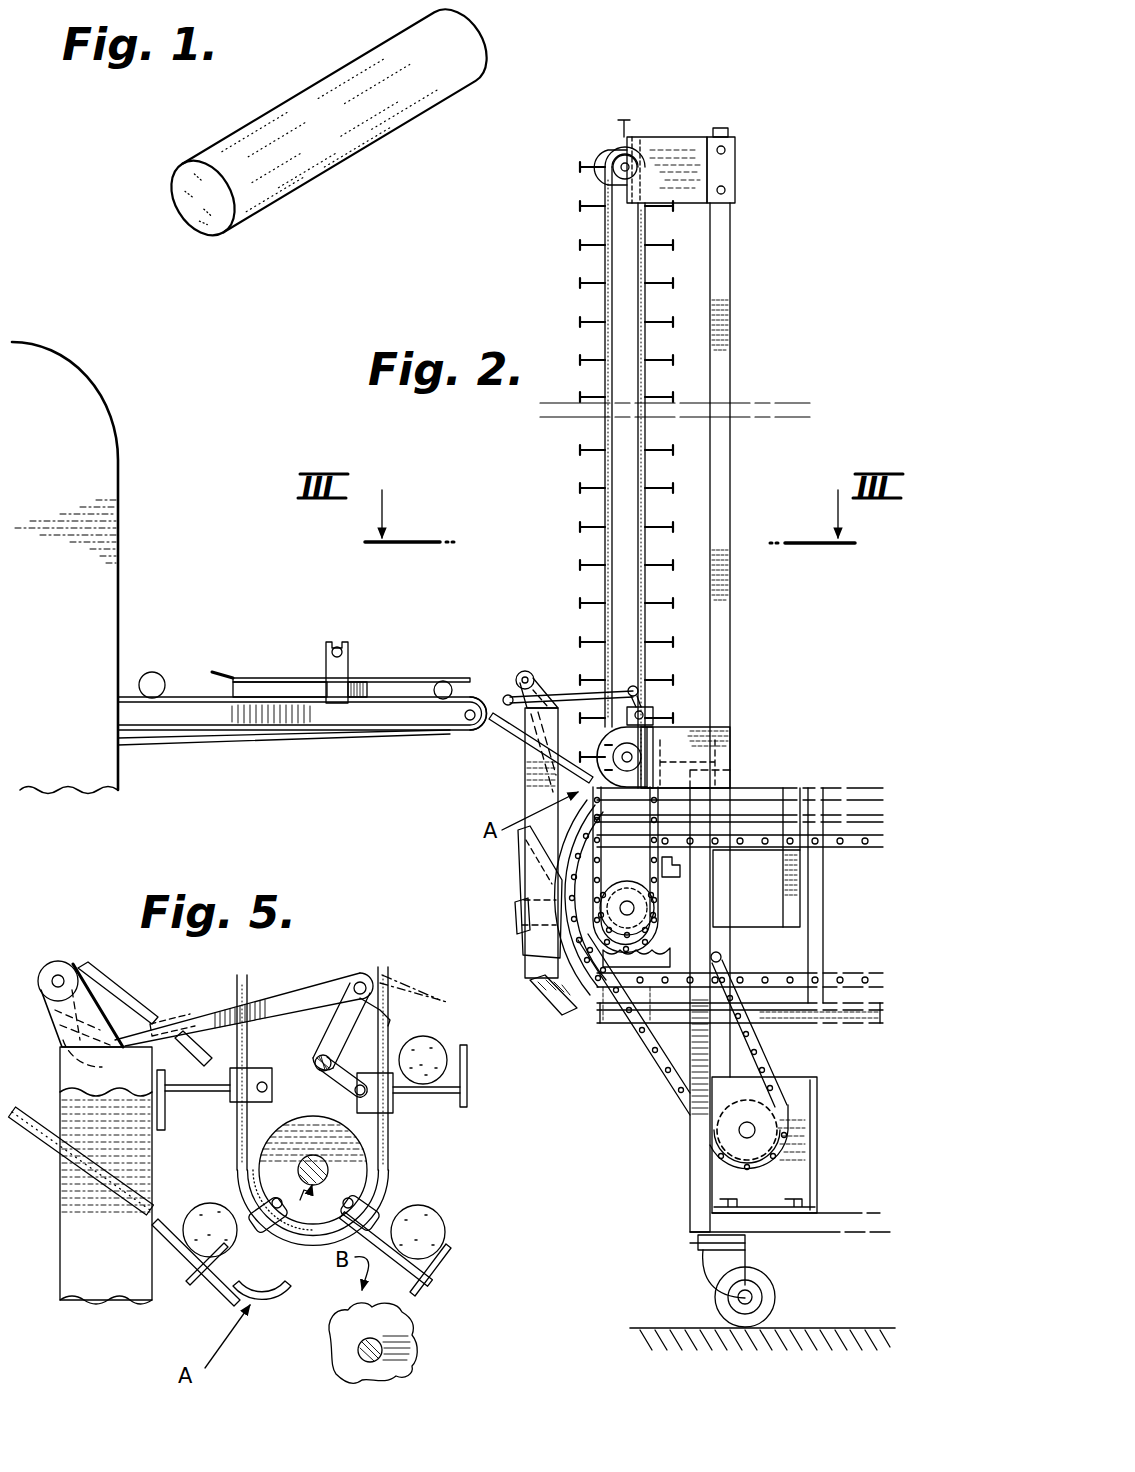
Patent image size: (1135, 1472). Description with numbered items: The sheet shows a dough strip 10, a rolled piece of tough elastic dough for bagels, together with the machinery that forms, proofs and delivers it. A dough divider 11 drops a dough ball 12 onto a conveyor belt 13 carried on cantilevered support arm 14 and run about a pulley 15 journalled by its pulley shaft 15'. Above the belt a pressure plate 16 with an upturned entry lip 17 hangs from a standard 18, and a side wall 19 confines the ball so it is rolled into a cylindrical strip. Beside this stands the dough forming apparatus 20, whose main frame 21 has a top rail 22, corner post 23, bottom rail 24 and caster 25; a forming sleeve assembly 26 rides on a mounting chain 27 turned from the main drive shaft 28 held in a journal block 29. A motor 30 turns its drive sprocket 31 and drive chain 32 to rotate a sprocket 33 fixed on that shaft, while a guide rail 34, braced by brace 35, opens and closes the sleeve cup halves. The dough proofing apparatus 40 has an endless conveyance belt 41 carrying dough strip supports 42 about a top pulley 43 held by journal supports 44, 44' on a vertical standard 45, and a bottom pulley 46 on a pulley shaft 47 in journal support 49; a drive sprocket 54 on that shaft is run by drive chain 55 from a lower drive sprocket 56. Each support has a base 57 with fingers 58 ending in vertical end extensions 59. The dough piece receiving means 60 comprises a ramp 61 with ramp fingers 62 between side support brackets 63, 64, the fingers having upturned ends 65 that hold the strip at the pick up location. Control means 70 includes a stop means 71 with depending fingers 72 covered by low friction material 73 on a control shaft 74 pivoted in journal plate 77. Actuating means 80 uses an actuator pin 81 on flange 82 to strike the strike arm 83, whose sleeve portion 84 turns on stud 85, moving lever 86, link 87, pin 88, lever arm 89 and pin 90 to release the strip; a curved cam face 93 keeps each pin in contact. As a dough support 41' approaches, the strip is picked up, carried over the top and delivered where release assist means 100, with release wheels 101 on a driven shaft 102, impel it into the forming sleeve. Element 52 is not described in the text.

In FIG. 1, the dough strip 10 is at (244, 115).
In FIG. 2, the dough strip 10 is at (443, 680).
In FIG. 5, the dough strip 10 is at (185, 1245).
In FIG. 2, the dough divider 11 is at (57, 388).
In FIG. 2, the dough ball 12 is at (152, 670).
In FIG. 2, the conveyor belt 13 is at (140, 742).
In FIG. 2, the cantilevered support arm 14 is at (222, 712).
In FIG. 2, the pulley 15 is at (420, 731).
In FIG. 2, the pulley shaft 15' is at (435, 742).
In FIG. 2, the pressure plate 16 is at (272, 677).
In FIG. 2, the upturned entry lip 17 is at (216, 670).
In FIG. 2, the standard 18 is at (333, 641).
In FIG. 2, the side wall 19 is at (358, 681).
In FIG. 2, the dough forming apparatus 20 is at (626, 1030).
In FIG. 2, the main frame 21 is at (686, 1197).
In FIG. 2, the top rail 22 is at (862, 778).
In FIG. 2, the corner post 23 is at (700, 1172).
In FIG. 2, the bottom rail 24 is at (862, 1234).
In FIG. 2, the support caster 25 is at (780, 1300).
In FIG. 2, the forming sleeve assembly 26 is at (838, 1032).
In FIG. 2, the mounting chain 27 is at (838, 976).
In FIG. 2, the main drive shaft 28 is at (632, 910).
In FIG. 2, the journal block 29 is at (677, 888).
In FIG. 2, the motor 30 is at (798, 1120).
In FIG. 2, the drive sprocket 31 is at (760, 1142).
In FIG. 2, the drive chain 32 is at (770, 1052).
In FIG. 2, the sprocket 33 is at (594, 992).
In FIG. 2, the guide rail 34 is at (850, 840).
In FIG. 2, the brace 35 is at (822, 895).
In FIG. 2, the dough proofing apparatus 40 is at (563, 229).
In FIG. 2, the conveyance belt 41 is at (643, 467).
In FIG. 5, the conveyance belt 41 is at (328, 1084).
In FIG. 5, the dough support 41' is at (277, 1264).
In FIG. 2, the dough strip support 42 is at (575, 284).
In FIG. 5, the dough strip support 42 is at (445, 1288).
In FIG. 2, the top pulley 43 is at (640, 163).
In FIG. 2, the journal support 44 is at (629, 117).
In FIG. 2, the journal support 44' is at (743, 165).
In FIG. 2, the vertical standard 45 is at (724, 326).
In FIG. 5, the bottom pulley 46 is at (260, 1142).
In FIG. 2, the pulley shaft 47 is at (634, 757).
In FIG. 5, the pulley shaft 47 is at (300, 1172).
In FIG. 2, the journal support 49 is at (641, 756).
In FIG. 2, the bearing block 52 is at (716, 770).
In FIG. 2, the drive sprocket 54 is at (585, 802).
In FIG. 2, the drive chain 55 is at (562, 898).
In FIG. 2, the lower drive sprocket 56 is at (562, 920).
In FIG. 5, the dough support base 57 is at (230, 1100).
In FIG. 5, the finger 58 is at (435, 1265).
In FIG. 5, the vertical end extension 59 is at (468, 1090).
In FIG. 2, the dough piece receiving means 60 is at (538, 742).
In FIG. 5, the dough piece receiving means 60 is at (85, 1225).
In FIG. 5, the ramp 61 is at (110, 1180).
In FIG. 5, the ramp finger 62 is at (215, 1305).
In FIG. 2, the side support bracket 63 is at (542, 787).
In FIG. 5, the side support bracket 63 is at (58, 1065).
In FIG. 5, the side support bracket 64 is at (80, 1300).
In FIG. 5, the upturned end 65 is at (255, 1300).
In FIG. 2, the control means 70 is at (524, 666).
In FIG. 5, the control means 70 is at (68, 935).
In FIG. 5, the stop means 71 is at (112, 985).
In FIG. 5, the depending finger 72 is at (203, 1030).
In FIG. 5, the low friction material 73 is at (188, 1025).
In FIG. 5, the control shaft 74 is at (62, 975).
In FIG. 5, the journal plate 77 is at (42, 965).
In FIG. 5, the actuating means 80 is at (366, 972).
In FIG. 5, the actuator pin 81 is at (362, 1096).
In FIG. 5, the flange 82 is at (395, 1090).
In FIG. 5, the strike arm 83 is at (425, 1035).
In FIG. 5, the sleeve portion 84 is at (300, 1072).
In FIG. 5, the stud 85 is at (378, 1018).
In FIG. 5, the lever 86 is at (337, 1020).
In FIG. 5, the link 87 is at (258, 1003).
In FIG. 5, the pin 88 is at (355, 980).
In FIG. 5, the lever arm 89 is at (45, 1027).
In FIG. 5, the pin 90 is at (92, 1058).
In FIG. 5, the curved cam face 93 is at (392, 983).
In FIG. 5, the release assist means 100 is at (432, 1355).
In FIG. 5, the release wheel 101 is at (340, 1368).
In FIG. 5, the driven shaft 102 is at (404, 1340).